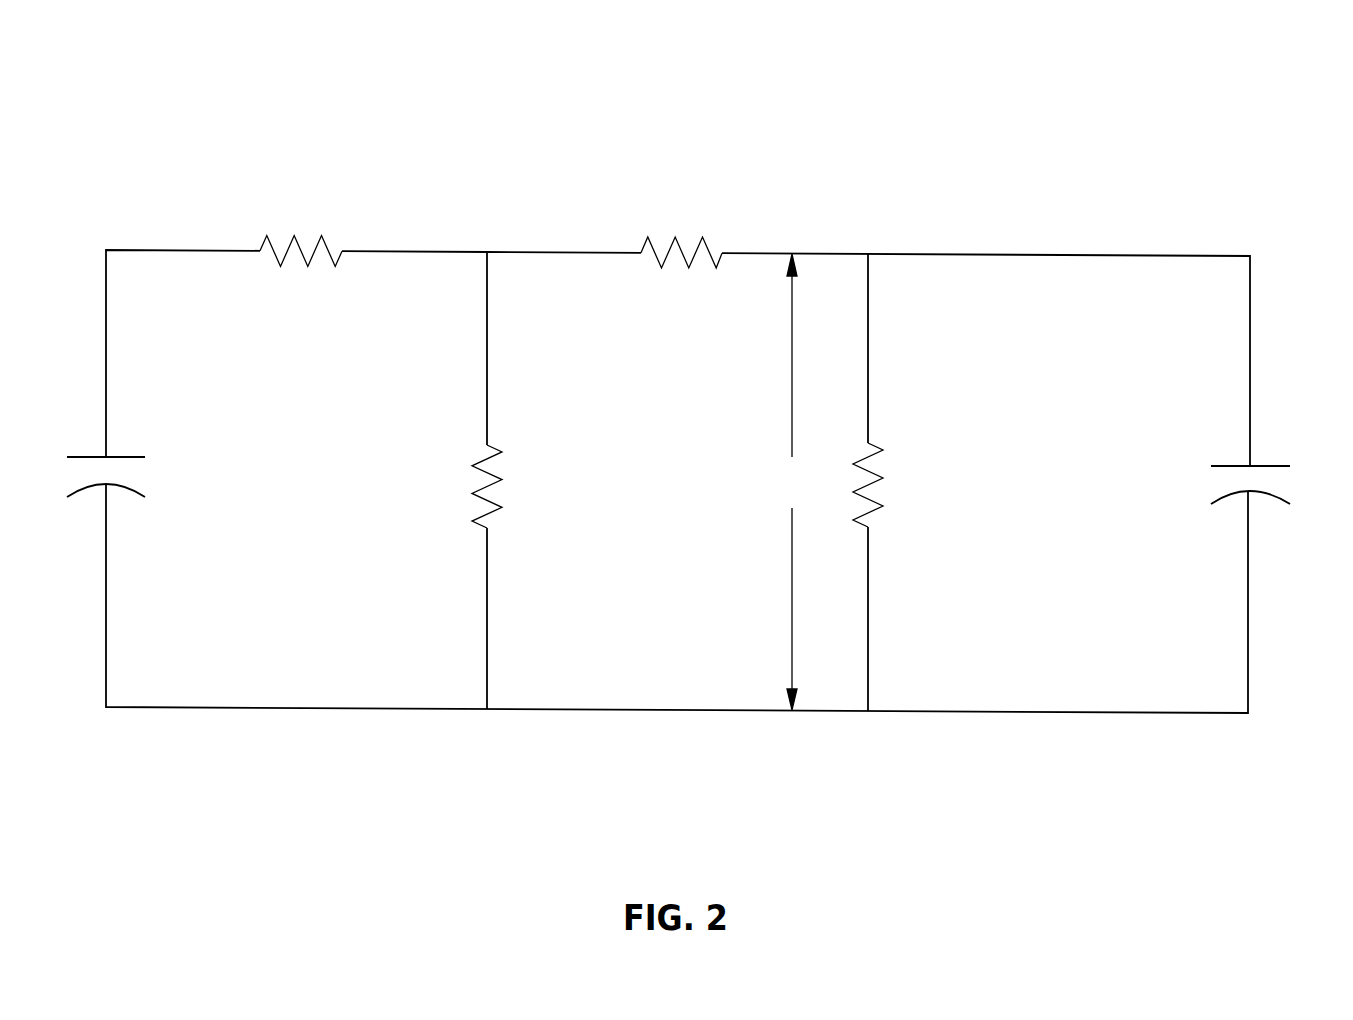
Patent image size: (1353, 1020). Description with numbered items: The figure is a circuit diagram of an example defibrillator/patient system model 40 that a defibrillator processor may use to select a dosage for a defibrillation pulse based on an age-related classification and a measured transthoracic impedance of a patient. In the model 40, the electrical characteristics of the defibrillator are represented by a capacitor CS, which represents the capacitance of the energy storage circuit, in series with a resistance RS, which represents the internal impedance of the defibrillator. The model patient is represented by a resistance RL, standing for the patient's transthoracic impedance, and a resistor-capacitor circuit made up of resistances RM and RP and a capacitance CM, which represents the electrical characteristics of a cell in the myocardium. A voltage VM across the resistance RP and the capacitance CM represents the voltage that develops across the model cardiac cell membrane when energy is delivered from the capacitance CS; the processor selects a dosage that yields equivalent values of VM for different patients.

The defibrillator/patient system model 40 is at (701, 375).
The resistance RS is at (301, 229).
The resistance RM is at (681, 227).
The resistance RL is at (506, 486).
The resistance RP is at (890, 485).
The capacitor CS is at (133, 481).
The capacitance CM is at (1273, 486).
The voltage VM is at (793, 482).